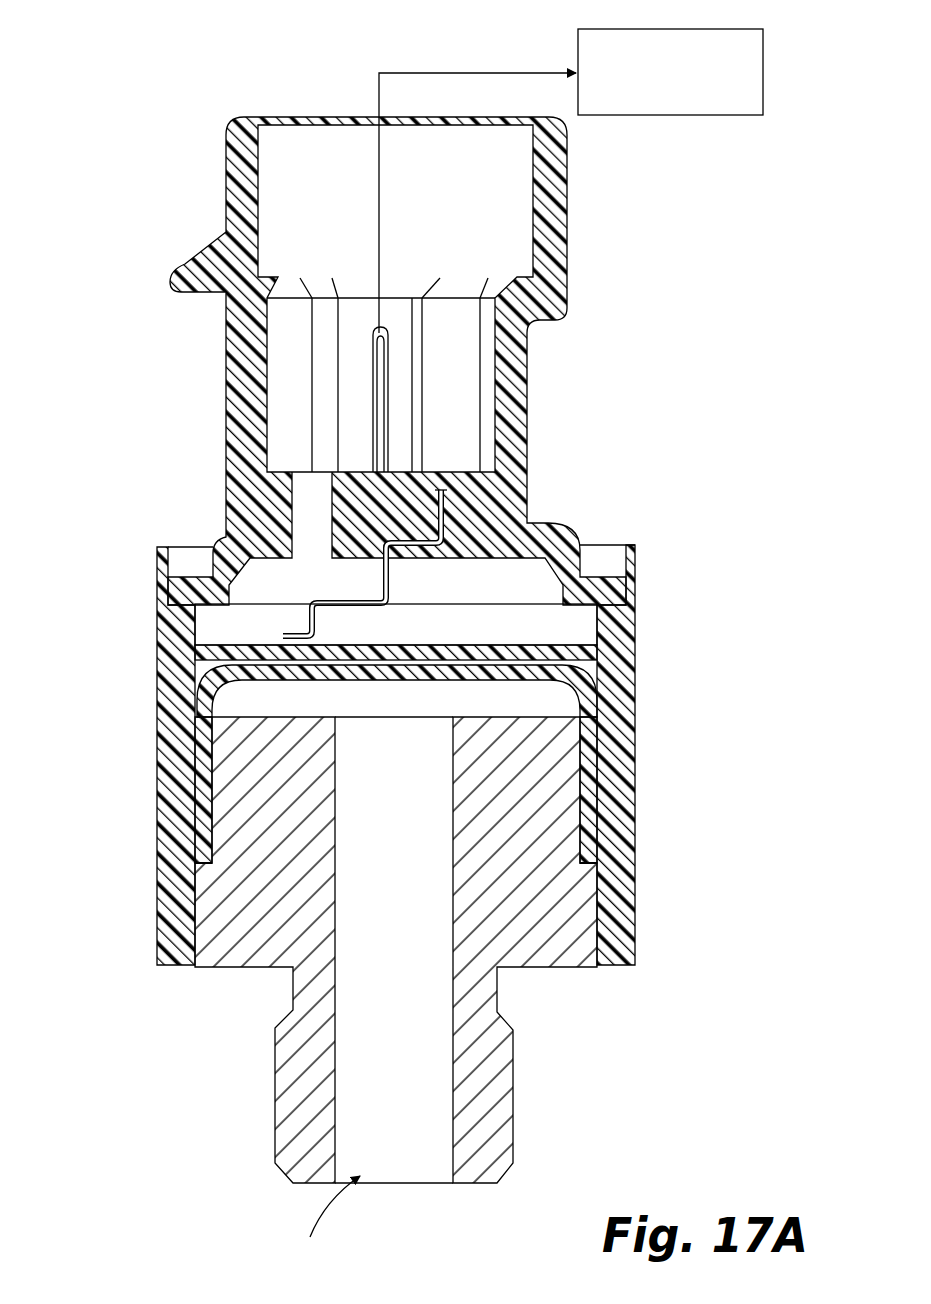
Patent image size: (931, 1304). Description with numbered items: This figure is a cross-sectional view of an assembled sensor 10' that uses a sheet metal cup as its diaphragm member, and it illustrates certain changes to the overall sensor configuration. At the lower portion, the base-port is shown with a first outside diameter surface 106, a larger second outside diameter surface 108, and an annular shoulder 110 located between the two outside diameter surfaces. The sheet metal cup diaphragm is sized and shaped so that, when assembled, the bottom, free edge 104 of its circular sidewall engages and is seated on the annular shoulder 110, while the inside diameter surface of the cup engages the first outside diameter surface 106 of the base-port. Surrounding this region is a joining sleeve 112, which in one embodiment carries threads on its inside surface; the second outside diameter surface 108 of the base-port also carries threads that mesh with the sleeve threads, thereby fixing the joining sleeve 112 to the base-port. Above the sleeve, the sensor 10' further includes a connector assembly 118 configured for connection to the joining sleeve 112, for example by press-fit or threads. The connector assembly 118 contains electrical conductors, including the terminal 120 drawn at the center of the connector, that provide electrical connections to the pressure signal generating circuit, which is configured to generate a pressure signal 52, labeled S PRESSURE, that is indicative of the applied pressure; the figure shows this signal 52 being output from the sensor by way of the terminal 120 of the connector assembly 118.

The sensor 10' is at (396, 629).
The pressure signal 52 is at (764, 62).
The bottom free edge 104 is at (589, 857).
The first outside diameter surface 106 is at (209, 787).
The second outside diameter surface 108 is at (189, 917).
The annular shoulder 110 is at (194, 867).
The joining sleeve 112 is at (161, 755).
The connector assembly 118 is at (223, 347).
The terminal pin 120 is at (380, 326).